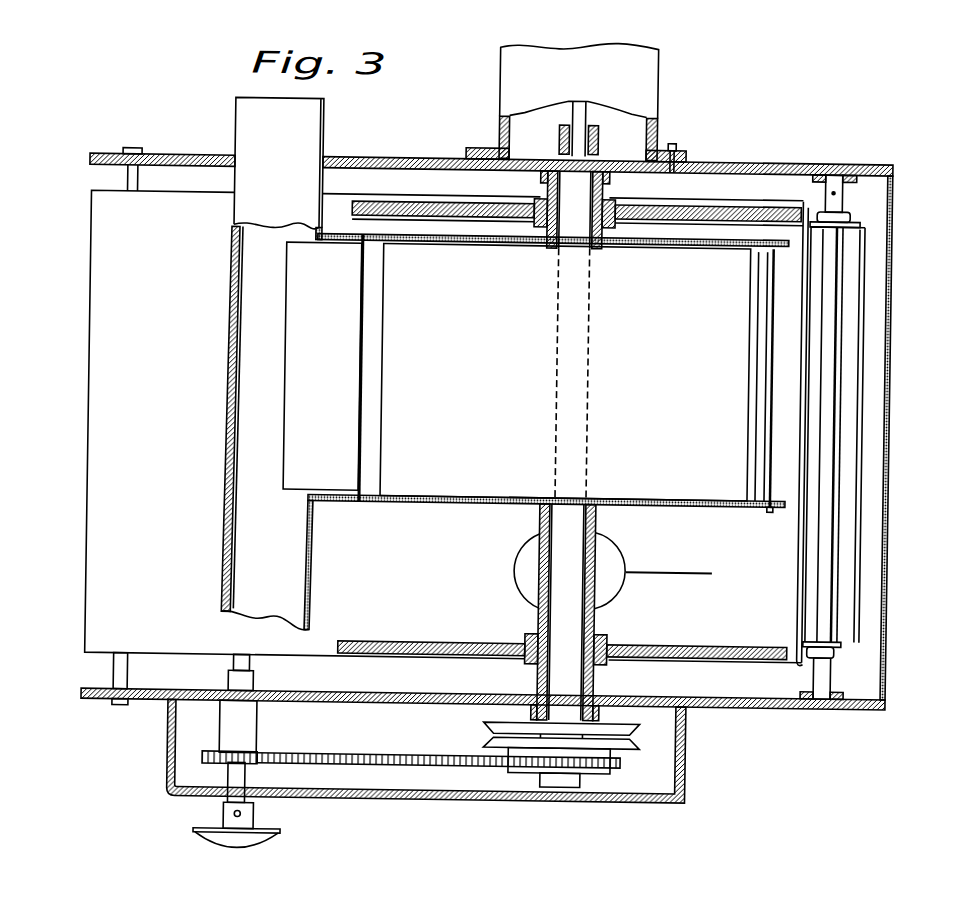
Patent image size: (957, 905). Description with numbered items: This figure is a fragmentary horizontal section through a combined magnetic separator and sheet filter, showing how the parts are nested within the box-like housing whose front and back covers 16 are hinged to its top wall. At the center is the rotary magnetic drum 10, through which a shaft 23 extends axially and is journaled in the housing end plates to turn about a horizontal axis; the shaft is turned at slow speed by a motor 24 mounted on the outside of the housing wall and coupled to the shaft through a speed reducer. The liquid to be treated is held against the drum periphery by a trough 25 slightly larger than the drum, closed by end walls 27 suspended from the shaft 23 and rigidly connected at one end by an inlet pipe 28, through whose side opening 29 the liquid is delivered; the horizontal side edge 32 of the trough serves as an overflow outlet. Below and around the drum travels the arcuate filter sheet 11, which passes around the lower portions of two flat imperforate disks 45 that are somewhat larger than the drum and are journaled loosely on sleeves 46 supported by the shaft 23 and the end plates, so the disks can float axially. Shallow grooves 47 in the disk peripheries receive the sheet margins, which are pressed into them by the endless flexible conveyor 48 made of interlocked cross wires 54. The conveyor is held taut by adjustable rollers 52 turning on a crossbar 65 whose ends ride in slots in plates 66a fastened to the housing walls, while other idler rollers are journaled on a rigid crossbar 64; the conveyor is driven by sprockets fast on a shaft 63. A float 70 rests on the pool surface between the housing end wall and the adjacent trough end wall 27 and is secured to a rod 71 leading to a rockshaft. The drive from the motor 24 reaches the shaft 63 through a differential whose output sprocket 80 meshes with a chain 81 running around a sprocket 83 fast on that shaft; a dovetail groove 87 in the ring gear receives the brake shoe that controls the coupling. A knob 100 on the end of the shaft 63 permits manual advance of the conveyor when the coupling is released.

The rotary magnetic drum 10 is at (379, 385).
The traveling sheet 11 is at (806, 444).
The front and back covers 16 is at (889, 436).
The shaft 23 is at (593, 143).
The motor 24 is at (653, 81).
The trough 25 is at (770, 288).
The end walls 27 is at (751, 243).
The inlet pipe 28 is at (320, 128).
The opening 29 is at (318, 247).
The side edge 32 is at (776, 341).
The disks 45 is at (712, 203).
The sleeves 46 is at (603, 239).
The grooves 47 is at (349, 204).
The endless flexible belt or conveyor 48 is at (866, 467).
The adjustable rollers 52 is at (848, 214).
The cross wires 54 is at (858, 448).
The shaft 63 is at (257, 669).
The crossbar 64 is at (118, 665).
The crossbar 65 is at (836, 398).
The plates 66a is at (840, 196).
The float 70 is at (522, 572).
The rod 71 is at (714, 570).
The sprocket 80 is at (617, 772).
The chain 81 is at (438, 764).
The sprocket 83 is at (262, 758).
The dovetail groove 87 is at (641, 735).
The knob 100 is at (282, 832).